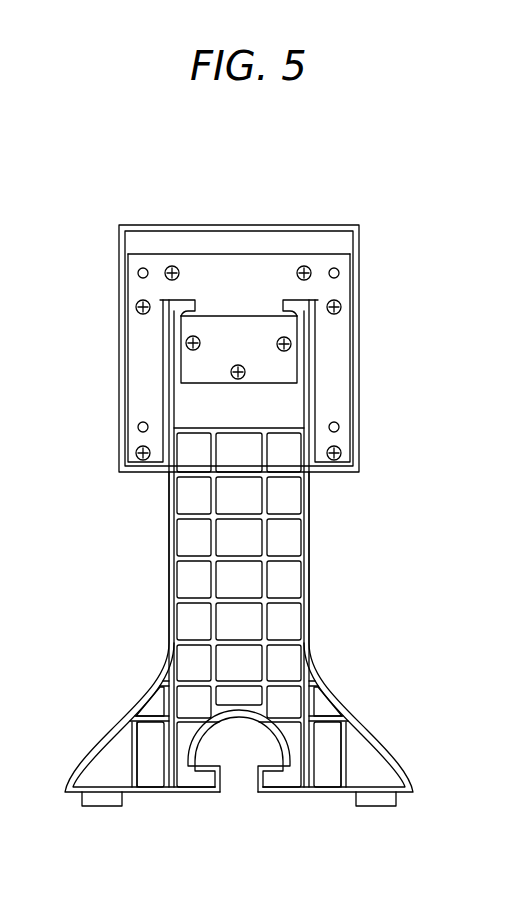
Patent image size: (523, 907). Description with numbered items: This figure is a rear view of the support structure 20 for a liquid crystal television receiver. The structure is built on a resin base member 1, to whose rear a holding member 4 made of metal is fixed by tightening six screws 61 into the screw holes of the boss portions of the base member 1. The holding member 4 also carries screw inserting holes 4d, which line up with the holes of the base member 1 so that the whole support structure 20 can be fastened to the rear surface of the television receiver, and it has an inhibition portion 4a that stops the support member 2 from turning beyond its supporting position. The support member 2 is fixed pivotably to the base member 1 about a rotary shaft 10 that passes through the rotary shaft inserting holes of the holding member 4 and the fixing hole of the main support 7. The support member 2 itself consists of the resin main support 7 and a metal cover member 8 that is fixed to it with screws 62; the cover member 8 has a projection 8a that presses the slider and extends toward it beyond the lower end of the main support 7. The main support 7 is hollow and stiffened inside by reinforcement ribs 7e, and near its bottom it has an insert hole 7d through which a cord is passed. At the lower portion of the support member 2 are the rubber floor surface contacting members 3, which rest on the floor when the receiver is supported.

The support structure 20 is at (372, 207).
The base member 1 is at (219, 225).
The support member 2 is at (168, 574).
The floor surface contacting members 3 is at (100, 806).
The holding member 4 is at (157, 362).
The inhibition portion 4a is at (240, 305).
The screw inserting holes 4d is at (138, 274).
The main support 7 is at (308, 615).
The insert hole 7d is at (240, 712).
The reinforcement ribs 7e is at (270, 533).
The cover member 8 is at (207, 378).
The projection 8a is at (288, 309).
The rotary shaft 10 is at (303, 318).
The screws 61 is at (173, 265).
The screws 62 is at (186, 342).